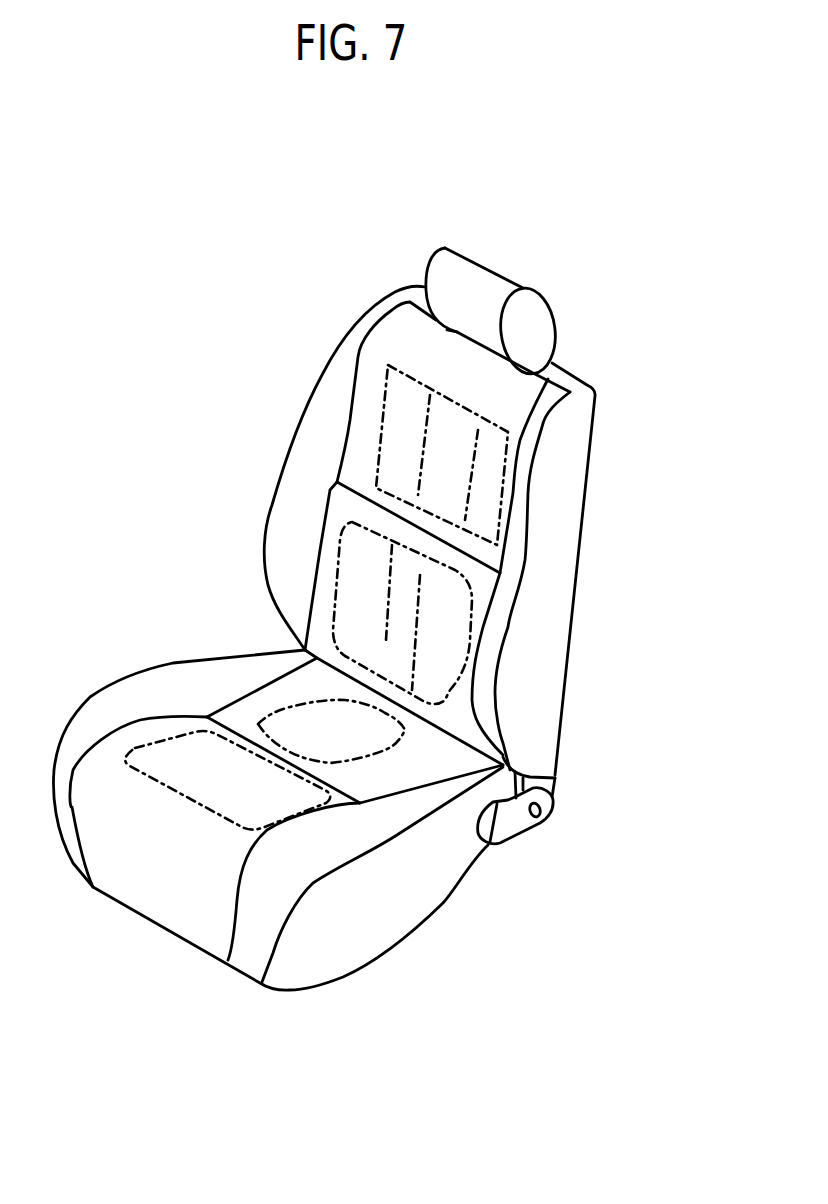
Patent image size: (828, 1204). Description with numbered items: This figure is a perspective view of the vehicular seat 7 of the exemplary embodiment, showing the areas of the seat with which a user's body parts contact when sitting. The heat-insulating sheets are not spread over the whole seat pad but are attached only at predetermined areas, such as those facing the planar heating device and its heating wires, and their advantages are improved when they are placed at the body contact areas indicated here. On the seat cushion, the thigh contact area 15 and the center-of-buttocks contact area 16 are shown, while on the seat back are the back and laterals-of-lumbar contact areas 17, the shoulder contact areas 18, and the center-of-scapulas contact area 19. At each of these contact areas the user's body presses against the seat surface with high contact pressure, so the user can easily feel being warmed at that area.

The vehicular seat 7 is at (570, 367).
The thigh contact area 15 is at (282, 793).
The center-of-buttocks contact area 16 is at (353, 742).
The back and laterals-of-lumbar contact areas 17 is at (440, 603).
The shoulder contact areas 18 is at (500, 447).
The center-of-scapulas contact area 19 is at (442, 440).